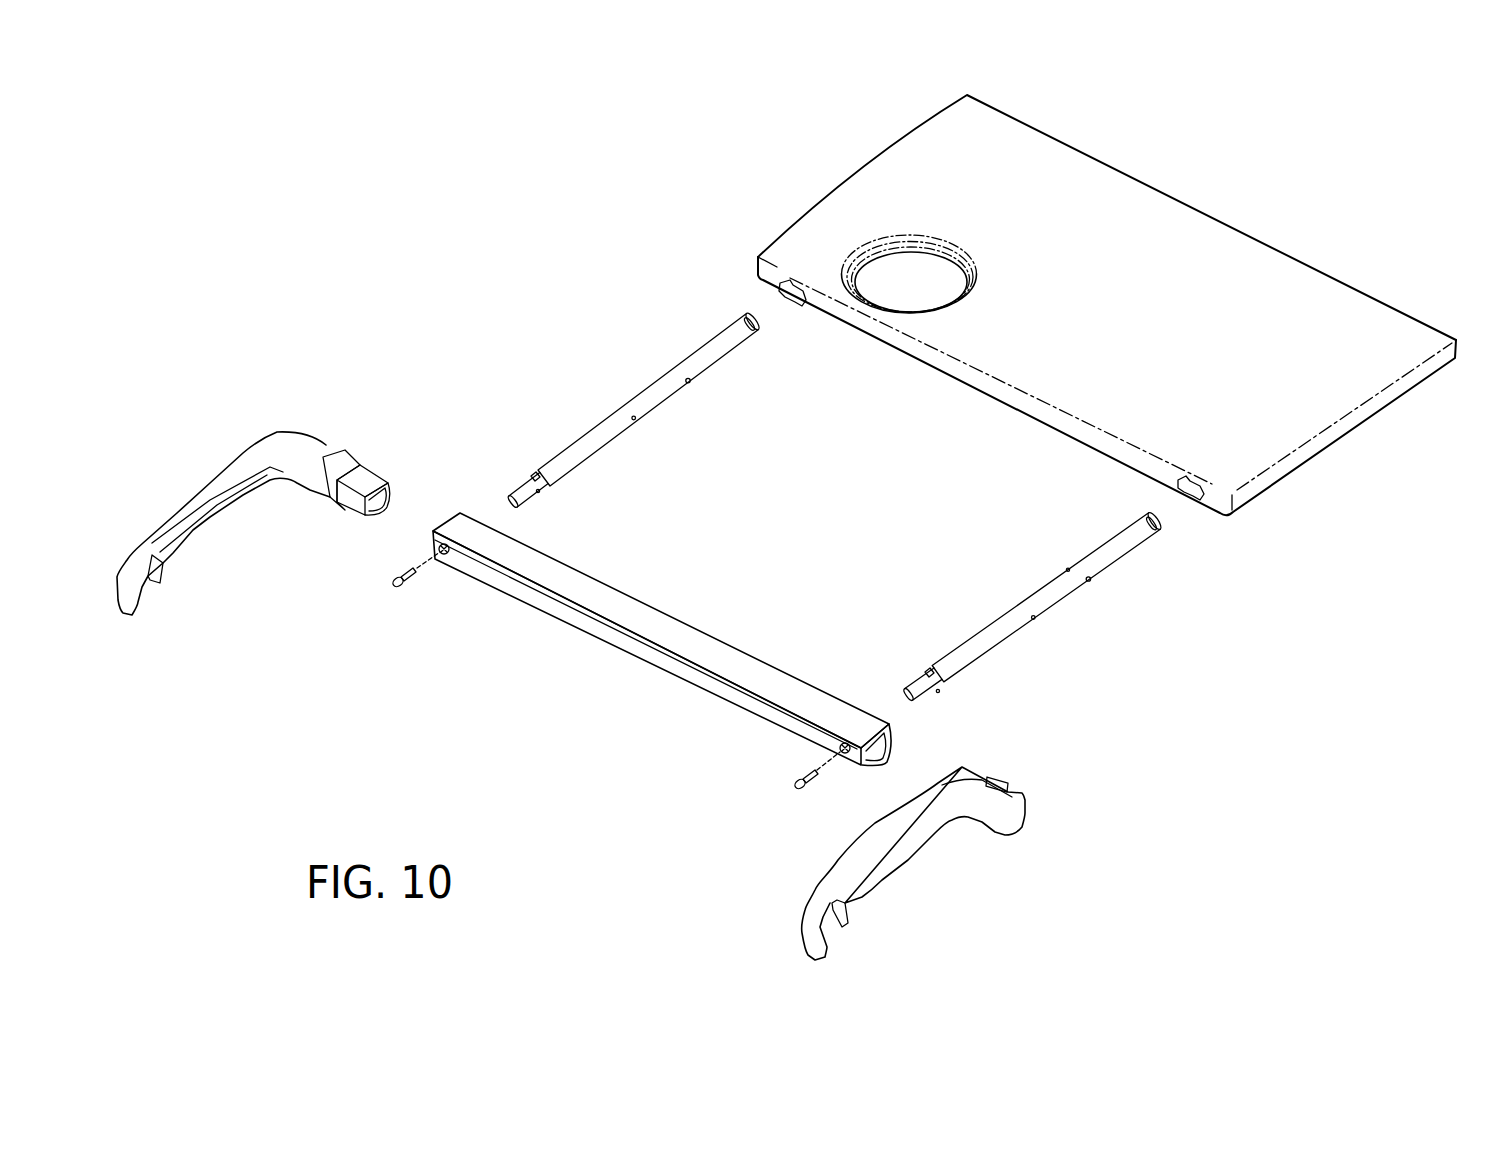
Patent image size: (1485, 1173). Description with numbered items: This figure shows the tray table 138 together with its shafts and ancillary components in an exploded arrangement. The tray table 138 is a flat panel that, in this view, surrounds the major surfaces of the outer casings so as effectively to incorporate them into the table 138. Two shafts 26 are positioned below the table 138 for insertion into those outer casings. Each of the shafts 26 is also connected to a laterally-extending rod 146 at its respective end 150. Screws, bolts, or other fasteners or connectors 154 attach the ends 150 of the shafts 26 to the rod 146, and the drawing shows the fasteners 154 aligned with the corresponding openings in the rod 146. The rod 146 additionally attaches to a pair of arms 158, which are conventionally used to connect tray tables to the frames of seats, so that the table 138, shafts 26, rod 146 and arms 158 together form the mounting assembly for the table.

The shaft 26 is at (664, 407).
The tray table 138 is at (1120, 295).
The laterally-extending rod 146 is at (593, 619).
The shaft end 150 is at (525, 508).
The fastener 154 is at (413, 580).
The arm 158 is at (282, 428).